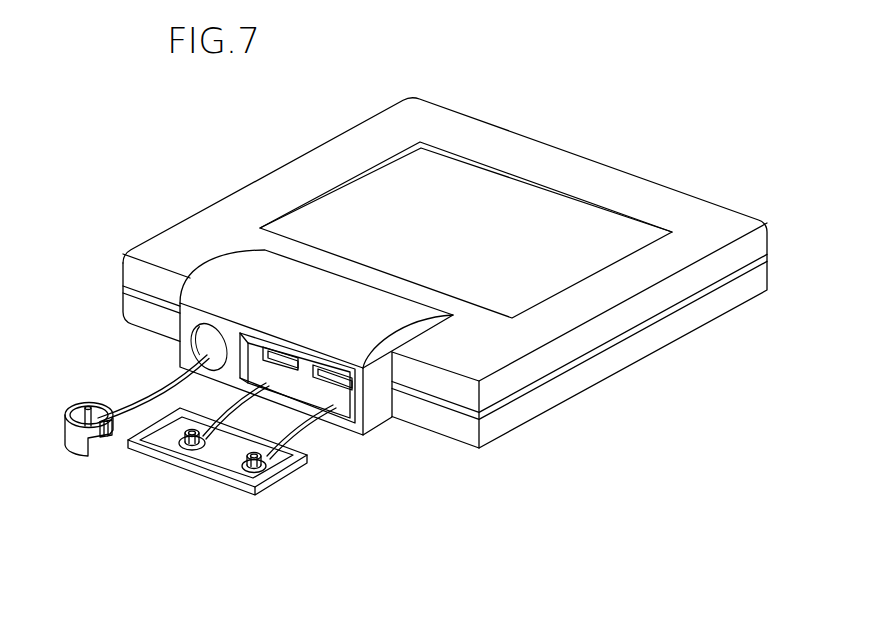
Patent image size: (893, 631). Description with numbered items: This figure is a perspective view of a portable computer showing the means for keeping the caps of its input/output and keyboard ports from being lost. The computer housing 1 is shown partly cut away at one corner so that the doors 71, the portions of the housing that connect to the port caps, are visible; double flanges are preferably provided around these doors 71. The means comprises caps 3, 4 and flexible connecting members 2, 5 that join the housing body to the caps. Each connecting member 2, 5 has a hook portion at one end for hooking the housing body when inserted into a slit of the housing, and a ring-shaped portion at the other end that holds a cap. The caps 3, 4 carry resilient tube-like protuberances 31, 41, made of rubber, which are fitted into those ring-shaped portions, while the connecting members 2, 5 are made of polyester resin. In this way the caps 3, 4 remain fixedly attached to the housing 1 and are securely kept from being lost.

The computer housing 1 is at (630, 352).
The connecting member 2 is at (307, 437).
The cap 3 is at (282, 475).
The tube-like protuberance 31 is at (247, 466).
The cap 4 is at (74, 440).
The tube-like protuberance 41 is at (70, 410).
The connecting member 5 is at (147, 400).
The door 71 is at (207, 343).